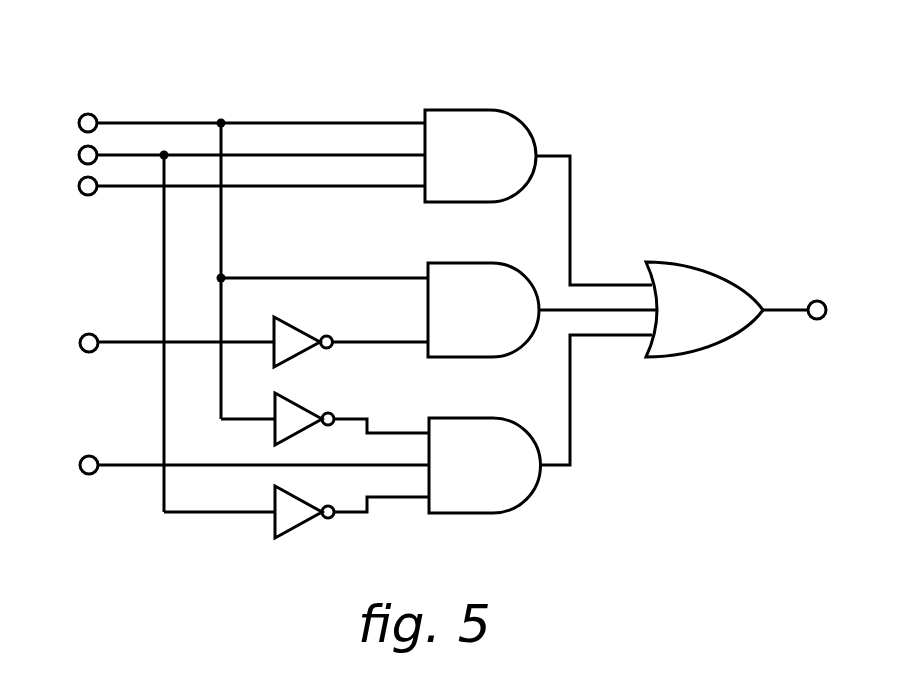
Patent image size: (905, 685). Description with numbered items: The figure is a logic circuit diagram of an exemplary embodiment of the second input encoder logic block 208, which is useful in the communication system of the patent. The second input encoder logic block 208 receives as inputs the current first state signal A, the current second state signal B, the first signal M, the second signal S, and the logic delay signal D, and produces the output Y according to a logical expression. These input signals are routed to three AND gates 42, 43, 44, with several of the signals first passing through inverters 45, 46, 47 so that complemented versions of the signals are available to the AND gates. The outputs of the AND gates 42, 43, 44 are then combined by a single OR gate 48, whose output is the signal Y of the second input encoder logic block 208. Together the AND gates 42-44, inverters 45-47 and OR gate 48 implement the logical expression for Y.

The second input encoder logic block 208 is at (352, 77).
The AND gate 42 is at (470, 110).
The AND gate 43 is at (473, 263).
The AND gate 44 is at (473, 418).
The inverter 45 is at (300, 331).
The inverter 46 is at (300, 407).
The inverter 47 is at (296, 527).
The OR gate 48 is at (668, 262).